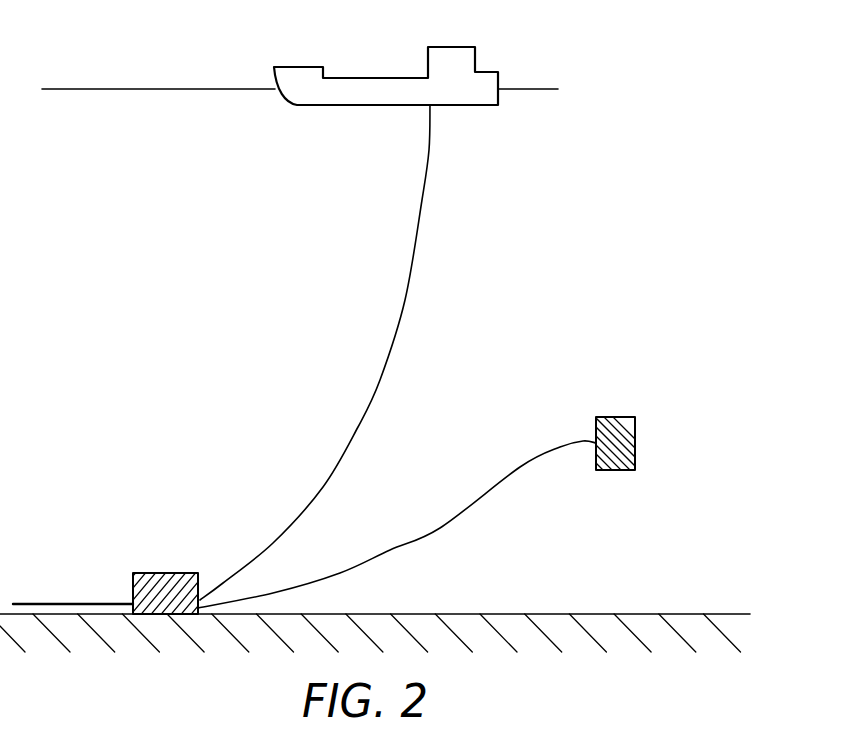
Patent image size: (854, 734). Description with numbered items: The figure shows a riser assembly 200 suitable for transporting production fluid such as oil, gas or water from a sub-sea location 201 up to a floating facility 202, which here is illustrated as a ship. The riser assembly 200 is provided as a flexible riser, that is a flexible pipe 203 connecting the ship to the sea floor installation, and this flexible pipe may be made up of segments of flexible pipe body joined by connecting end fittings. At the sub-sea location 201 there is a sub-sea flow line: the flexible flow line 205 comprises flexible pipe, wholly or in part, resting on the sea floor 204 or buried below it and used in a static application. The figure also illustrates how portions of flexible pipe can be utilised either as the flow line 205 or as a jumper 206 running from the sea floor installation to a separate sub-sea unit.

The riser assembly 200 is at (518, 225).
The sub-sea location 201 is at (163, 573).
The floating facility 202 is at (297, 67).
The flexible pipe 203 is at (358, 427).
The sea floor 204 is at (700, 614).
The flexible flow line 205 is at (55, 603).
The jumper 206 is at (520, 467).